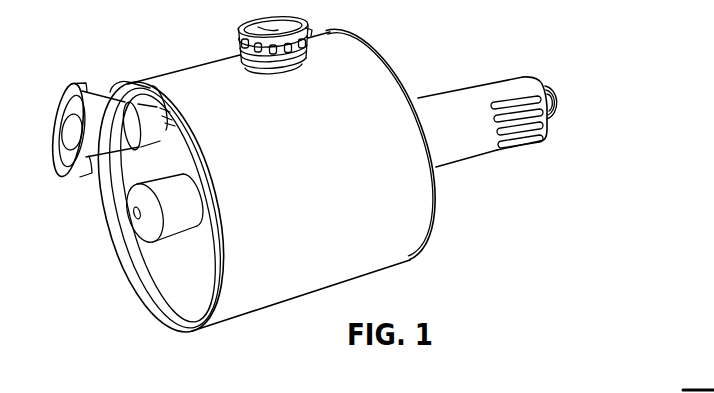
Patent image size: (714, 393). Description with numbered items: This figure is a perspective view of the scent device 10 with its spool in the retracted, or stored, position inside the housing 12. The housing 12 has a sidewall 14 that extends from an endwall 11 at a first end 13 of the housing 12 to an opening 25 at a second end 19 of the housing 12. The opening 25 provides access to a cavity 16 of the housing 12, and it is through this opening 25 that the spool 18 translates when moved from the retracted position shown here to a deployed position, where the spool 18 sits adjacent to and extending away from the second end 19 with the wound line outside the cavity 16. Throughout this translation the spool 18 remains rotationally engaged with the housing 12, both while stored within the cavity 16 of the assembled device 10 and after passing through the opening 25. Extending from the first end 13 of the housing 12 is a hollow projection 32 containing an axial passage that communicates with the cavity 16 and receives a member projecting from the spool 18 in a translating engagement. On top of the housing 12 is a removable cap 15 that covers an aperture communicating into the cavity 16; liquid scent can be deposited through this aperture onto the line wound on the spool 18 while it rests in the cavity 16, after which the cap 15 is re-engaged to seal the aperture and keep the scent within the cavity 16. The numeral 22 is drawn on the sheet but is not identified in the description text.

The scent device 10 is at (510, 219).
The endwall 11 is at (438, 196).
The housing 12 is at (385, 57).
The first end 13 is at (410, 261).
The sidewall 14 is at (319, 150).
The removable cap 15 is at (244, 30).
The cavity 16 is at (203, 308).
The spool 18 is at (183, 265).
The second end 19 is at (207, 332).
The outlet nozzle 22 is at (90, 107).
The opening 25 is at (122, 90).
The hollow projection 32 is at (473, 96).